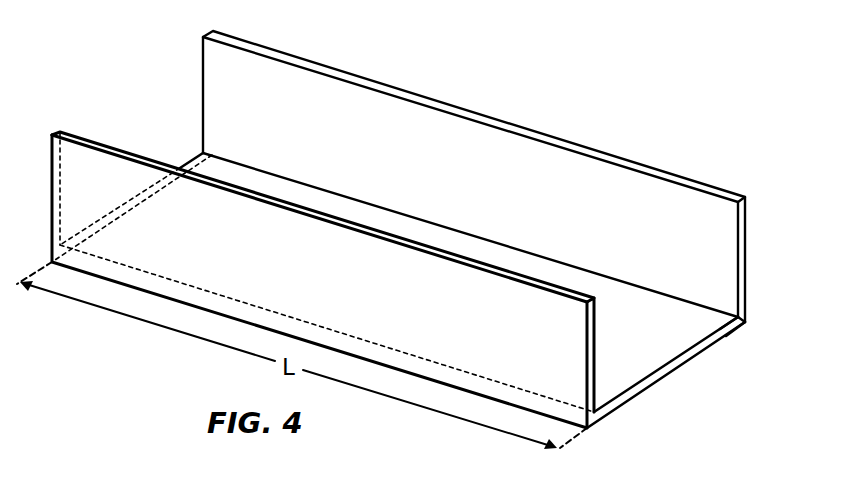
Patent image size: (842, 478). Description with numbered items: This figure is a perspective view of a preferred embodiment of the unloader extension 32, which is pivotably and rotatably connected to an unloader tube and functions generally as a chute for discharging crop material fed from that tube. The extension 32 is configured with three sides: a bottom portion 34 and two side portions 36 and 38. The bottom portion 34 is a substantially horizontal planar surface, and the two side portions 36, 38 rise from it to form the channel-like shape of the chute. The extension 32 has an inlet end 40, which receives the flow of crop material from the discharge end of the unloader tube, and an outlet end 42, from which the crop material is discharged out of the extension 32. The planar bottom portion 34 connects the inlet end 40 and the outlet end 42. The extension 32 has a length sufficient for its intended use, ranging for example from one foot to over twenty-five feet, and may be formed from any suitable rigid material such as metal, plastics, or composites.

The unloader extension 32 is at (426, 230).
The bottom portion 34 is at (662, 375).
The side portion 36 is at (316, 256).
The side portion 38 is at (748, 268).
The inlet end 40 is at (110, 122).
The outlet end 42 is at (709, 357).